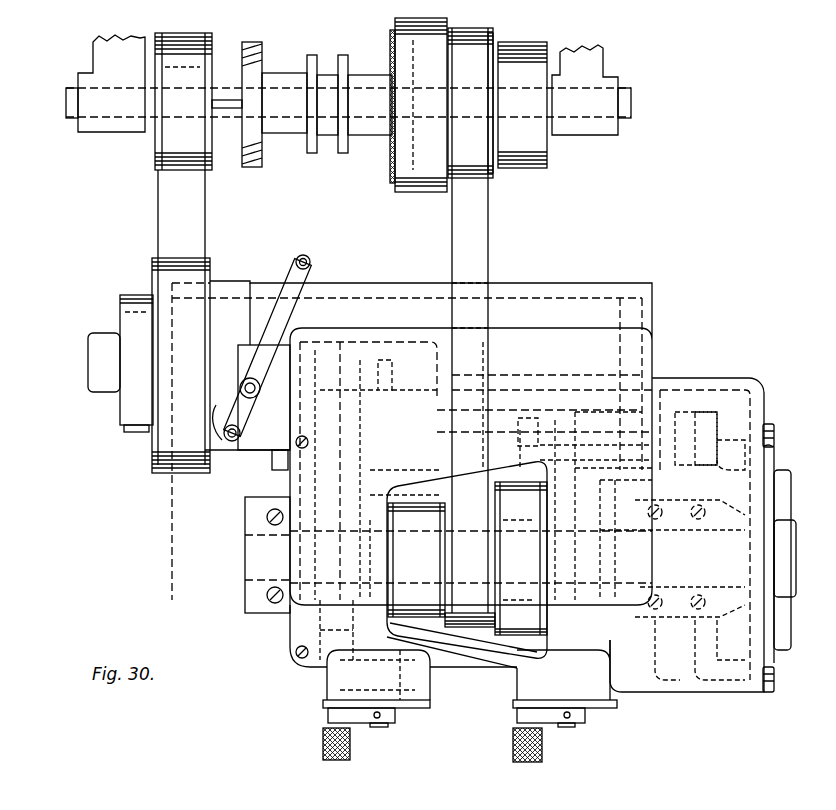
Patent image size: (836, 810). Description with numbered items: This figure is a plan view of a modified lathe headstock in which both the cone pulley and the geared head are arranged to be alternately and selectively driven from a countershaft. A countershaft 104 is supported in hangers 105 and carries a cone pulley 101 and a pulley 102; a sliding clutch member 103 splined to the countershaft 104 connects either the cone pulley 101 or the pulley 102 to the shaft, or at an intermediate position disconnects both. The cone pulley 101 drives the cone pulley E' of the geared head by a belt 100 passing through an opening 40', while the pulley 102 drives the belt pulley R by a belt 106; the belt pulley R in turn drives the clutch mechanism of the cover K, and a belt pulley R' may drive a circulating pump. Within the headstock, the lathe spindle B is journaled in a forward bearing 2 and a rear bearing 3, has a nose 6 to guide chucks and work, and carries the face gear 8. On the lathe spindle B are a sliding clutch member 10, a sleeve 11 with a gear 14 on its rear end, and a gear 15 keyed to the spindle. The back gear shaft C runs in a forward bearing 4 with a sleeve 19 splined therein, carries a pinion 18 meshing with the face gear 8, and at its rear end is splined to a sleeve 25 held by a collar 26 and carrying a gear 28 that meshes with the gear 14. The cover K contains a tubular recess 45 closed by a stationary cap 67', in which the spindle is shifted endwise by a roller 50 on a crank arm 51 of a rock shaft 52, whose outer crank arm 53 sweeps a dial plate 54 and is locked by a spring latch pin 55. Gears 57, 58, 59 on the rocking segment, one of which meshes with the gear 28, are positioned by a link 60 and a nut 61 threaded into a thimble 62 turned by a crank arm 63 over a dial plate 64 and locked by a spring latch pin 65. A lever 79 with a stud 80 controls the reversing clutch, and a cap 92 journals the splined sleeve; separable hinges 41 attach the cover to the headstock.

The forward bearing 2 is at (677, 590).
The rear bearing 3 is at (245, 585).
The forward bearing 4 is at (672, 395).
The nose 6 is at (797, 548).
The face gear 8 is at (778, 463).
The sliding clutch member 10 is at (606, 503).
The sleeve 11 is at (525, 630).
The gear 14 is at (320, 655).
The gear 15 is at (300, 628).
The pinion 18 is at (710, 395).
The sleeve 19 is at (594, 413).
The sleeve 25 is at (490, 400).
The collar 26 is at (272, 465).
The gear 28 is at (362, 348).
The opening 40' is at (452, 681).
The separable hinges 41 is at (776, 440).
The tubular recess 45 is at (422, 292).
The roller 50 is at (534, 418).
The crank arm 51 is at (585, 450).
The rock shaft 52 is at (575, 500).
The crank arm 53 is at (543, 722).
The dial plate 54 is at (620, 710).
The spring latch pin 55 is at (512, 745).
The gear 57 is at (350, 400).
The gear 58 is at (398, 382).
The gear 59 is at (390, 366).
The link 60 is at (388, 562).
The nut 61 is at (398, 652).
The thimble 62 is at (345, 680).
The crank arm 63 is at (352, 720).
The dial plate 64 is at (432, 708).
The spring latch pin 65 is at (322, 745).
The stationary cap 67' is at (658, 384).
The lever 79 is at (297, 258).
The stud 80 is at (222, 455).
The cap 92 is at (105, 393).
The belt 100 is at (490, 230).
The cone pulley 101 is at (545, 170).
The pulley 102 is at (210, 178).
The sliding clutch member 103 is at (285, 140).
The countershaft 104 is at (632, 103).
The hangers 105 is at (103, 58).
The belt 106 is at (160, 205).
The belt pulley R is at (197, 350).
The belt pulley R' is at (126, 344).
The cover K is at (530, 288).
The back gear shaft C is at (520, 390).
The cone pulley E' is at (467, 580).
The lathe spindle B is at (515, 628).